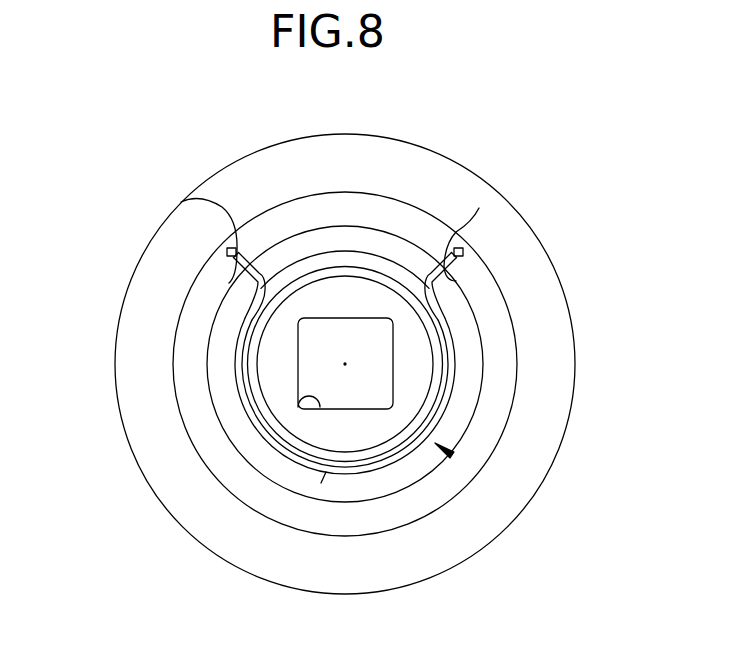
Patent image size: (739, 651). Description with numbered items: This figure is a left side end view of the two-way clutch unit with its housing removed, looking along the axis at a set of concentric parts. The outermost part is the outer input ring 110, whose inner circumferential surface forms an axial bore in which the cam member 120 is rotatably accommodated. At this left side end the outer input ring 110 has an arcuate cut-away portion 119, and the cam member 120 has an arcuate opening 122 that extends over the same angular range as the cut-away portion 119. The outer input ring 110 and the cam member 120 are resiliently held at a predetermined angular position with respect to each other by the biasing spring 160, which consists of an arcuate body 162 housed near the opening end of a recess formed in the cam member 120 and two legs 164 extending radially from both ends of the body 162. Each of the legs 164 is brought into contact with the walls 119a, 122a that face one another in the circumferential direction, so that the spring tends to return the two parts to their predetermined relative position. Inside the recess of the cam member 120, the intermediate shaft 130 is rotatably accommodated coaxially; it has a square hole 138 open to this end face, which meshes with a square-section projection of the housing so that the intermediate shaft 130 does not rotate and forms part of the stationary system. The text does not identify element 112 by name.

The outer input ring 110 is at (554, 456).
The inner wall 112 is at (568, 371).
The arcuate cut-away portion 119 is at (318, 207).
The wall 119a is at (181, 202).
The cam member 120 is at (452, 455).
The arcuate opening 122 is at (364, 240).
The wall 122a is at (261, 259).
The intermediate shaft 130 is at (373, 438).
The square hole 138 is at (298, 407).
The biasing spring 160 is at (220, 393).
The arcuate body 162 is at (321, 483).
The legs 164 is at (229, 283).